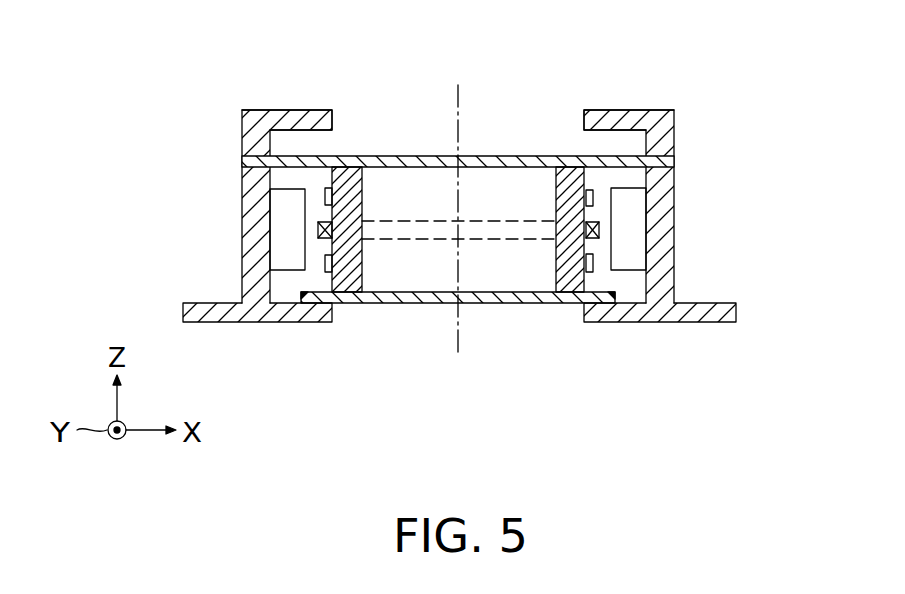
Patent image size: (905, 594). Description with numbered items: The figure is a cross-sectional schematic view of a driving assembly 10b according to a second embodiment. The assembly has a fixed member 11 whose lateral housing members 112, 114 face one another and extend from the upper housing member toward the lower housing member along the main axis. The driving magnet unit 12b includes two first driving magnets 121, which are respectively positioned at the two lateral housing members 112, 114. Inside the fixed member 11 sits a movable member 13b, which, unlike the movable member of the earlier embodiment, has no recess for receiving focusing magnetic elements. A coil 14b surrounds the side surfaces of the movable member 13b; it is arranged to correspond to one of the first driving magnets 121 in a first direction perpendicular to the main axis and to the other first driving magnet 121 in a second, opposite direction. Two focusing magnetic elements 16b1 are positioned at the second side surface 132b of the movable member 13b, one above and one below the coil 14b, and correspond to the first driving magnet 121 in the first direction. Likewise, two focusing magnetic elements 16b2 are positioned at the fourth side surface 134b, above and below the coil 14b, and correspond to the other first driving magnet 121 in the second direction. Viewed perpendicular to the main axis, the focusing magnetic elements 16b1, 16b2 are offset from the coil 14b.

The driving assembly 10b is at (444, 218).
The fixed member 11 is at (458, 186).
The lateral housing member 112 is at (250, 128).
The lateral housing member 114 is at (665, 128).
The driving magnet unit 12b is at (628, 187).
The first driving magnet 121 is at (282, 216).
The focusing magnetic element 16b1 is at (322, 197).
The focusing magnetic element 16b2 is at (593, 197).
The coil 14b is at (600, 229).
The movable member 13b is at (413, 293).
The second side surface 132b is at (328, 281).
The fourth side surface 134b is at (587, 282).